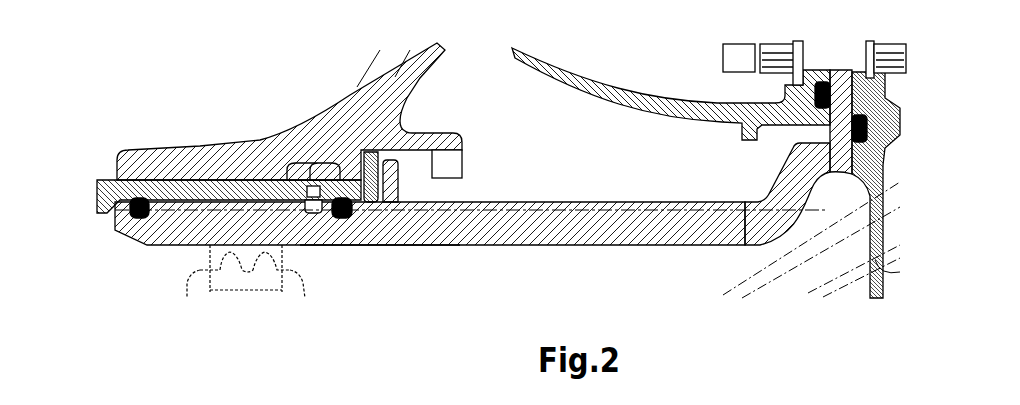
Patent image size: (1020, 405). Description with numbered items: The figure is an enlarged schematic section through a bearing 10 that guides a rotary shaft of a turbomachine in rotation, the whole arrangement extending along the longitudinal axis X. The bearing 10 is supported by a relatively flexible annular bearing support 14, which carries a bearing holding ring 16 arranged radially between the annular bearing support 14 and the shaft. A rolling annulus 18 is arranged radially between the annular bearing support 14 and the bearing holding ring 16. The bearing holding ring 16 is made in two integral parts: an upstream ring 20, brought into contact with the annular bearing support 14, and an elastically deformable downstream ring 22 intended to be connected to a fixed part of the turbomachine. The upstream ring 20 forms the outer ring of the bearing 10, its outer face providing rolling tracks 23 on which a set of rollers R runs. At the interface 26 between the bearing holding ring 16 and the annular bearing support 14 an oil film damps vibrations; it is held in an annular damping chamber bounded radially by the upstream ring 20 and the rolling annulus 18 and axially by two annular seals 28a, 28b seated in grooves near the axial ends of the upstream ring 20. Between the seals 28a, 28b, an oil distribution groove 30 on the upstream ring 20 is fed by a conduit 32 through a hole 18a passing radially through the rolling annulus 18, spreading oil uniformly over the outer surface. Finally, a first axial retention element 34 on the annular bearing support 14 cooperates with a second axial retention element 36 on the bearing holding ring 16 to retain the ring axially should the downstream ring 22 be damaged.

The bearing 10 is at (466, 193).
The annular bearing support 14 is at (289, 101).
The bearing holding ring 16 is at (472, 247).
The rolling annulus 18 is at (229, 144).
The hole 18a is at (303, 167).
The upstream ring 20 is at (328, 262).
The downstream ring 22 is at (608, 227).
The rolling tracks 23 is at (380, 247).
The interface 26 is at (215, 192).
The annular seal 28a is at (137, 194).
The annular seal 28b is at (343, 220).
The oil distribution groove 30 is at (298, 216).
The conduit 32 is at (385, 78).
The first axial retention element 34 is at (452, 166).
The second axial retention element 36 is at (400, 177).
The rollers R is at (265, 278).
The longitudinal axis X is at (90, 210).